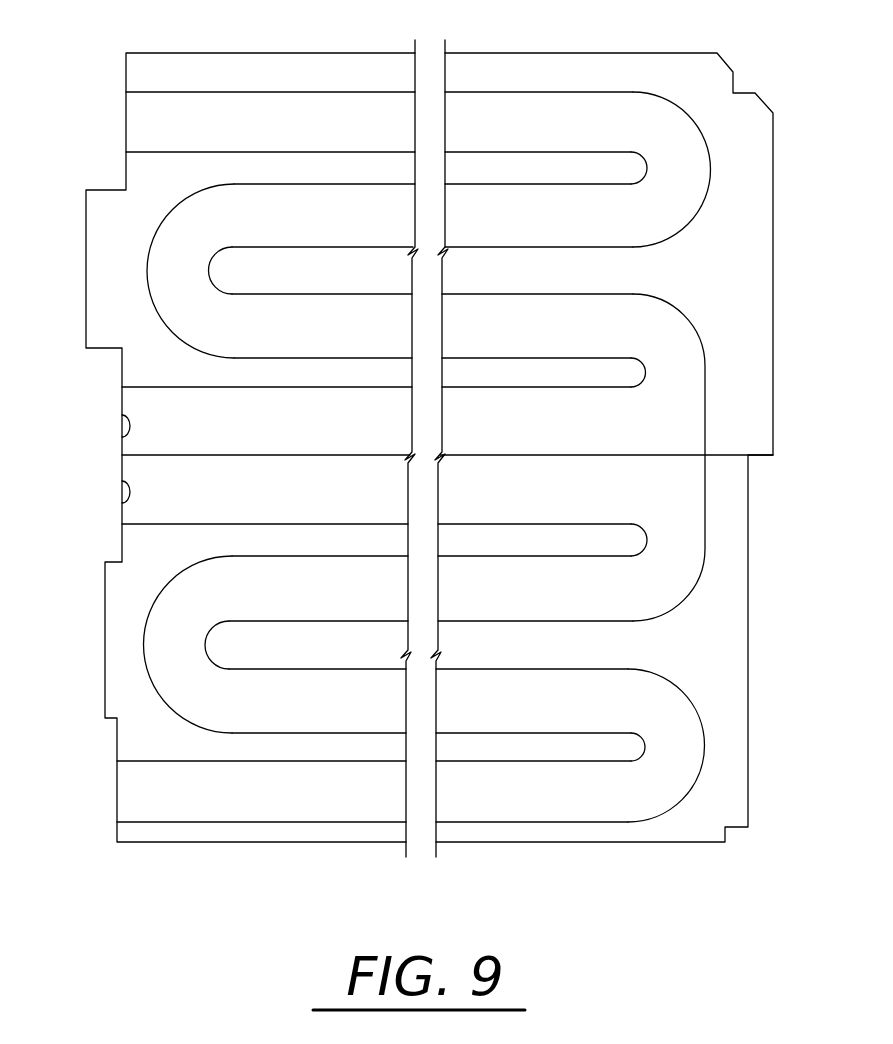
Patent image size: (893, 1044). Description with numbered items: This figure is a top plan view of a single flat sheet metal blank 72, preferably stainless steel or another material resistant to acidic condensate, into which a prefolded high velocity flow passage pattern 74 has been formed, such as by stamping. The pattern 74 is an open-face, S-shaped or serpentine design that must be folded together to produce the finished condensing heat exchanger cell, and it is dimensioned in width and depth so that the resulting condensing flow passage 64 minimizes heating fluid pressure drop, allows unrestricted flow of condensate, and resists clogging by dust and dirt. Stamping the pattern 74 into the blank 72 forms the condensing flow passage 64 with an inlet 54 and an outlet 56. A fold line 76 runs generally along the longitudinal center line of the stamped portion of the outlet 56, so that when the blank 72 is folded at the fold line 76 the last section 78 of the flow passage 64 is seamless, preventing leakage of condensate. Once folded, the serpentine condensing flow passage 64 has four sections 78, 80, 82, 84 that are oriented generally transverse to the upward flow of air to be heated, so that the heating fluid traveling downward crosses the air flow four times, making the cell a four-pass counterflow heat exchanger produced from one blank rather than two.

The condensing heat exchanger inlet 54 is at (126, 118).
The condensing heat exchanger outlet 56 is at (122, 415).
The condensing flow passage 64 is at (655, 208).
The flat sheet metal blank 72 is at (198, 848).
The prefolded high velocity flow passage pattern 74 is at (324, 80).
The fold line 76 is at (512, 455).
The last section of flow passage 78 is at (376, 455).
The flow passage section 80 is at (431, 457).
The flow passage section 82 is at (431, 458).
The flow passage section 84 is at (375, 457).